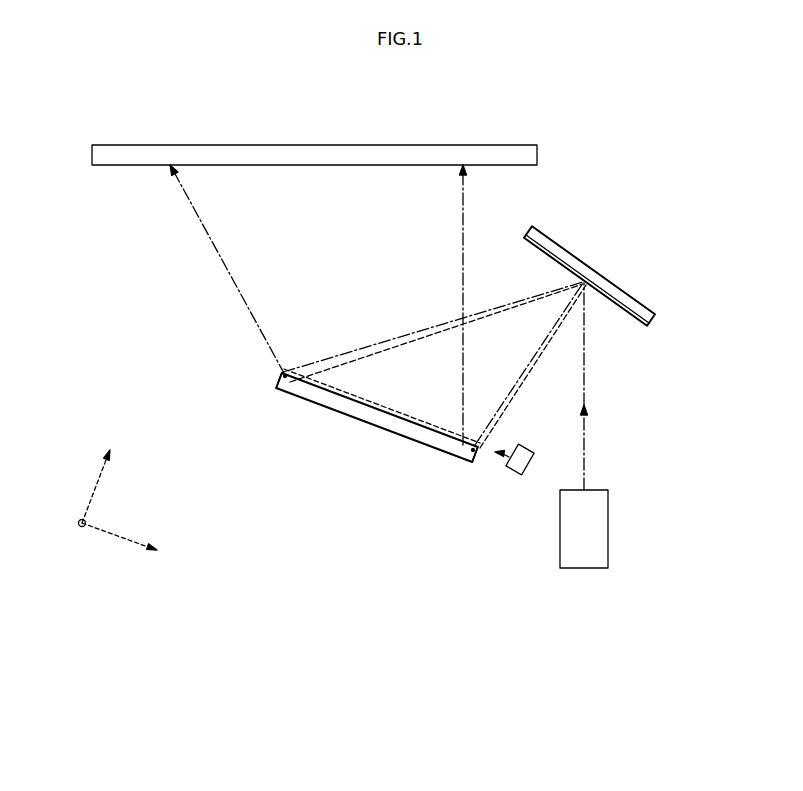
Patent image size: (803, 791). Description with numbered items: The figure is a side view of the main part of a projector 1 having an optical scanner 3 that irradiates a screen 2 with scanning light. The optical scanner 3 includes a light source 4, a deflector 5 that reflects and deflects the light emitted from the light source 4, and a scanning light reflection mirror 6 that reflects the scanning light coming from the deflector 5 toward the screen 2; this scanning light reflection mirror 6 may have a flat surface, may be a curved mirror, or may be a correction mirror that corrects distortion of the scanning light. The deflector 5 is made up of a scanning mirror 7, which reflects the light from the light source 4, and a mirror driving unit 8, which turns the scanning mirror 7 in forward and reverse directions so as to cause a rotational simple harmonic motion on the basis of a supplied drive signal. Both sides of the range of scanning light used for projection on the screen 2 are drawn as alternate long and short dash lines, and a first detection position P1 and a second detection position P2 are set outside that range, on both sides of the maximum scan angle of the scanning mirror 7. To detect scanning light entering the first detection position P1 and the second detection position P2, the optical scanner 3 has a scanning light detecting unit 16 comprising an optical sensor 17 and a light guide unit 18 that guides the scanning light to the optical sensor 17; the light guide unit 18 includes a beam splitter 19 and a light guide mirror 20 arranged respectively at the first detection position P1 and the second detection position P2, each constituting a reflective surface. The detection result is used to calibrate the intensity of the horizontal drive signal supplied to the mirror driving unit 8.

The projector 1 is at (668, 95).
The screen 2 is at (238, 145).
The optical scanner 3 is at (165, 341).
The light source 4 is at (608, 528).
The deflector 5 is at (628, 203).
The scanning light reflection mirror 6 is at (377, 408).
The scanning mirror 7 is at (592, 268).
The mirror driving unit 8 is at (637, 293).
The scanning light detecting unit 16 is at (332, 545).
The optical sensor 17 is at (513, 475).
The light guide unit 18 is at (315, 498).
The beam splitter 19 is at (452, 457).
The light guide mirror 20 is at (290, 392).
The first detection position P1 is at (470, 458).
The second detection position P2 is at (284, 388).